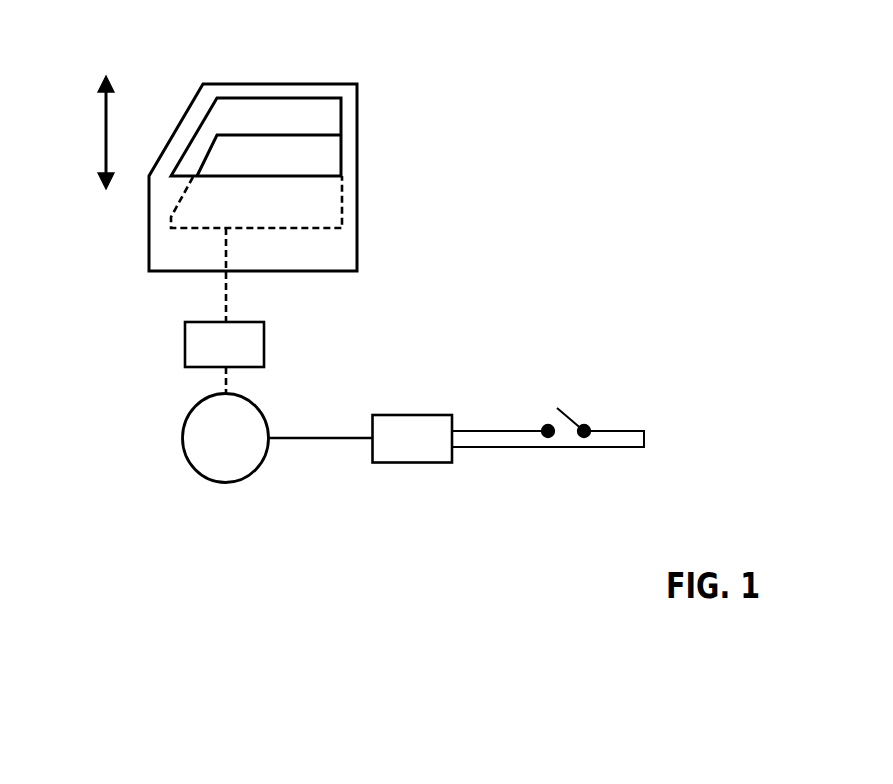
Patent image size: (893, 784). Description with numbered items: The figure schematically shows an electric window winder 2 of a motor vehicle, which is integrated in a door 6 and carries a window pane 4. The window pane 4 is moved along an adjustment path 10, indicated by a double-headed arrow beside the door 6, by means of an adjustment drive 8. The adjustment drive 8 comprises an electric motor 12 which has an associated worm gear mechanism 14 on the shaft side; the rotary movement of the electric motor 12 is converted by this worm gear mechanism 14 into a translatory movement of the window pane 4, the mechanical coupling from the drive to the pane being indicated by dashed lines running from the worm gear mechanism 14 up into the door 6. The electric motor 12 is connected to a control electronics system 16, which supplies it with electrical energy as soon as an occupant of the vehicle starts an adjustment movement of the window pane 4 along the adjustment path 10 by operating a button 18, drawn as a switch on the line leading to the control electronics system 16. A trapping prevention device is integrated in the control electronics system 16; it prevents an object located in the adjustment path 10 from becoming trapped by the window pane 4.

The electric window winder 2 is at (494, 105).
The window pane 4 is at (328, 156).
The door 6 is at (328, 245).
The adjustment drive 8 is at (355, 365).
The adjustment path 10 is at (105, 125).
The electric motor 12 is at (202, 460).
The worm gear mechanism 14 is at (185, 345).
The control electronics system 16 is at (399, 453).
The button 18 is at (567, 413).